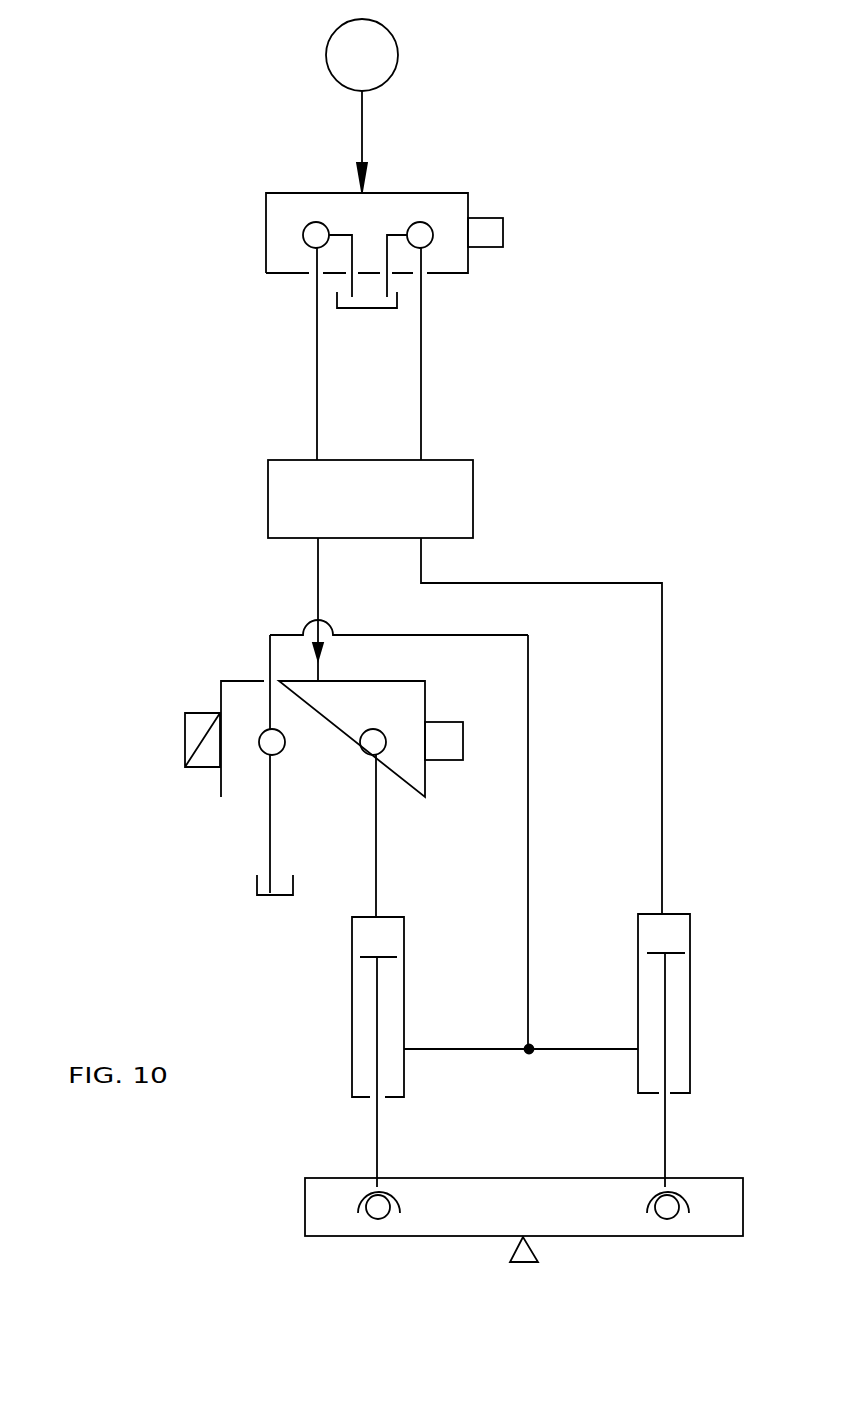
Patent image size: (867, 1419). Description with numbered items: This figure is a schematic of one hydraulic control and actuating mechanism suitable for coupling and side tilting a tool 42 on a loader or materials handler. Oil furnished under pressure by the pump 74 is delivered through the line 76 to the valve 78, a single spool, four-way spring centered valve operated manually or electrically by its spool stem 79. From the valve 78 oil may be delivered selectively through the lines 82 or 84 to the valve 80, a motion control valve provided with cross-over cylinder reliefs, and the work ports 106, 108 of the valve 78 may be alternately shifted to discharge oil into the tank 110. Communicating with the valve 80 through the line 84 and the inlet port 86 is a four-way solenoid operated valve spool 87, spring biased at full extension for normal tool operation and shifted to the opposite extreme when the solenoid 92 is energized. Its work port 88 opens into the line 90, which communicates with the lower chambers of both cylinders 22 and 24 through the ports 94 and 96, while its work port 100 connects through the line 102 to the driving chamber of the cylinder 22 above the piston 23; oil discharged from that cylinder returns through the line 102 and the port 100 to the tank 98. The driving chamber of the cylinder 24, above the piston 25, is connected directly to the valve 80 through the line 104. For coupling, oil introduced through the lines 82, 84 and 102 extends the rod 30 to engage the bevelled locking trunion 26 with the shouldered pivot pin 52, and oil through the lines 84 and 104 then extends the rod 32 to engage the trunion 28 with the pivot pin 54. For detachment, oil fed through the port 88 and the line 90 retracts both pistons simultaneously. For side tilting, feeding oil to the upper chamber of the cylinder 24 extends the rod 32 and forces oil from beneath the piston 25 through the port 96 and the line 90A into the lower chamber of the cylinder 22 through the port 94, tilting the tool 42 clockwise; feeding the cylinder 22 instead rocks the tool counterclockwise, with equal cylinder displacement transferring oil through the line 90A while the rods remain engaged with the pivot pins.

The pump 74 is at (398, 52).
The line 76 is at (362, 121).
The valve 78 is at (470, 190).
The spool stem 79 is at (503, 232).
The valve 80 is at (460, 462).
The line 82 is at (317, 372).
The line 84 is at (421, 343).
The inlet port 86 is at (325, 676).
The valve spool 87 is at (215, 672).
The work port 88 is at (262, 738).
The line 90 is at (528, 714).
The line 90A is at (562, 1051).
The solenoid 92 is at (185, 720).
The port 94 is at (404, 1040).
The port 96 is at (637, 1047).
The tank 98 is at (256, 898).
The work port 100 is at (379, 738).
The line 102 is at (376, 840).
The line 104 is at (662, 836).
The work port 106 is at (303, 235).
The work port 108 is at (430, 243).
The tank 110 is at (337, 302).
The cylinder 22 is at (350, 1031).
The piston 23 is at (380, 955).
The cylinder 24 is at (702, 1009).
The piston 25 is at (675, 952).
The locking trunion 26 is at (358, 1200).
The locking trunion 28 is at (687, 1200).
The rod 30 is at (377, 1133).
The rod 32 is at (668, 1127).
The tool 42 is at (518, 1170).
The pivot pin 52 is at (377, 1217).
The pivot pin 54 is at (667, 1213).